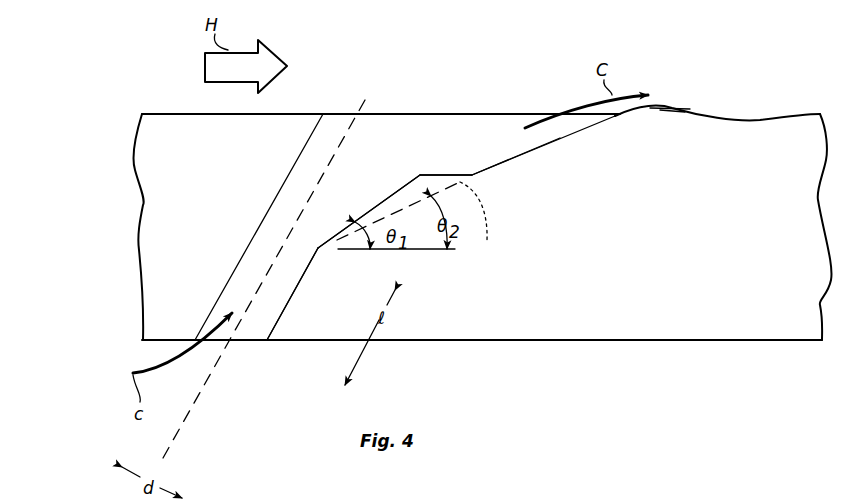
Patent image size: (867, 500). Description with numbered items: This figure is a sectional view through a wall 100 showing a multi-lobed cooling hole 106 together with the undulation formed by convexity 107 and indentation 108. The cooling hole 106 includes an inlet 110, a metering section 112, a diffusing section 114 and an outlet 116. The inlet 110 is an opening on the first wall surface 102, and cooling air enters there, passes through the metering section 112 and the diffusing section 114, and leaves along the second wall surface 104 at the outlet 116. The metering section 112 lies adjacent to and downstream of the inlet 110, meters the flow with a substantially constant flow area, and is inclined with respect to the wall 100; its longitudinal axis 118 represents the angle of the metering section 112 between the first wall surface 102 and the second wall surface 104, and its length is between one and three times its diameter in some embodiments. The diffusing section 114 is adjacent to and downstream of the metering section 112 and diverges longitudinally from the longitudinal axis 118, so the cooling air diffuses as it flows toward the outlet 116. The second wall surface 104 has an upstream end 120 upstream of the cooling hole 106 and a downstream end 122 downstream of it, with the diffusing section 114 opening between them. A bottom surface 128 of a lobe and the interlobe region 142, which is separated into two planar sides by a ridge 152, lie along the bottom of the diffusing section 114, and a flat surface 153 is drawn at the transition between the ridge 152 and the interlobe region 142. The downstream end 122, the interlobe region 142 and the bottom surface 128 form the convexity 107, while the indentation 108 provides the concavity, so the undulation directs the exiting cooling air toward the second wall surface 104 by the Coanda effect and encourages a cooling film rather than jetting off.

The wall 100 is at (100, 165).
The first wall surface 102 is at (742, 340).
The second wall surface 104 is at (168, 114).
The multi-lobed cooling hole 106 is at (292, 170).
The convexity 107 is at (672, 121).
The indentation 108 is at (772, 116).
The inlet 110 is at (246, 340).
The metering section 112 is at (283, 312).
The diffusing section 114 is at (386, 140).
The outlet 116 is at (463, 114).
The longitudinal axis 118 is at (193, 405).
The upstream end 120 is at (318, 113).
The downstream end 122 is at (683, 108).
The bottom surface 128 is at (420, 218).
The interlobe region 142 is at (529, 144).
The ridge 152 is at (362, 218).
The flat surface 153 is at (420, 175).